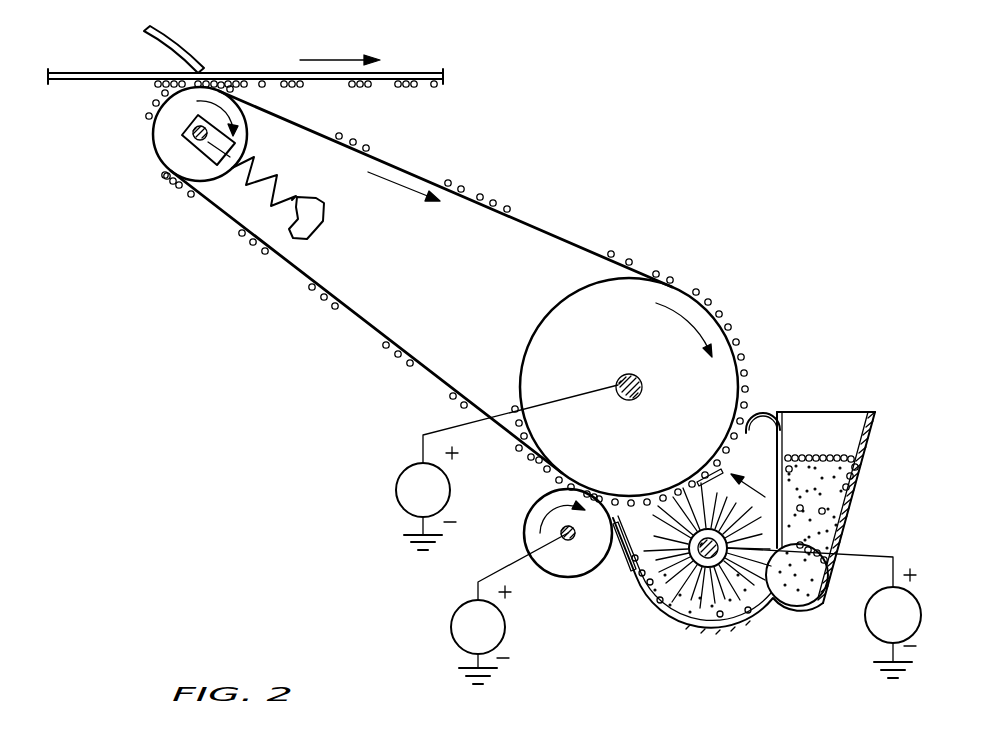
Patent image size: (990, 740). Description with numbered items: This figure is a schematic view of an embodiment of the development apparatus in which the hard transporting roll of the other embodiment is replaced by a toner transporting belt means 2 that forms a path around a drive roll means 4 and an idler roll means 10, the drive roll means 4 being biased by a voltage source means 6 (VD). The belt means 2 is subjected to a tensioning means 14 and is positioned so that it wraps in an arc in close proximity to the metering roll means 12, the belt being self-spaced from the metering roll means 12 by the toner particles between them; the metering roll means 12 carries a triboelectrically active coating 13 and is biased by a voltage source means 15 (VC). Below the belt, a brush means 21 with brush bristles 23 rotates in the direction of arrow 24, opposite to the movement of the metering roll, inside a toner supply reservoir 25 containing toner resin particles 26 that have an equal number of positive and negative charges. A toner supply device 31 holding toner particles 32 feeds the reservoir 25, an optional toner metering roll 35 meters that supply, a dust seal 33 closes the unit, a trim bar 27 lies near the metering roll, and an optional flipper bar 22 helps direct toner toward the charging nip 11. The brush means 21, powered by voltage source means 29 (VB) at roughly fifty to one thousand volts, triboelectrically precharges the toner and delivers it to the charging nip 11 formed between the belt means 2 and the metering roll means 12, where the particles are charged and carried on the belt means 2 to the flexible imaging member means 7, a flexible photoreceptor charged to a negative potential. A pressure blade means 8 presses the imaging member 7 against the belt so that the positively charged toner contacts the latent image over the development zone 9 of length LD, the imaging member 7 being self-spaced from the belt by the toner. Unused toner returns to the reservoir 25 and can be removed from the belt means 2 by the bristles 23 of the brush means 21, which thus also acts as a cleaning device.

The toner transporting belt means 2 is at (543, 228).
The drive roll means 4 is at (698, 308).
The voltage source means (VD) 6 is at (403, 463).
The flexible imaging member means 7 is at (407, 73).
The pressure blade means 8 is at (177, 50).
The development zone (LD) 9 is at (217, 83).
The idler roll means 10 is at (163, 162).
The charging nip 11 is at (598, 488).
The metering roll means 12 is at (545, 573).
The triboelectrically active coating 13 is at (445, 187).
The tensioning means 14 is at (290, 195).
The voltage source means (VC) 15 is at (452, 625).
The brush means 21 is at (713, 560).
The flipper bar 22 is at (717, 473).
The brush bristles 23 is at (678, 622).
The arrow indicating direction of brush movement 24 is at (780, 473).
The toner supply reservoir 25 is at (727, 630).
The toner resin particles 26 is at (652, 608).
The trim bar 27 is at (613, 545).
The voltage source means (VB) 29 is at (917, 623).
The toner supply device 31 is at (873, 423).
The toner particles 32 is at (817, 457).
The dust seal 33 is at (768, 410).
The toner metering roll 35 is at (810, 588).